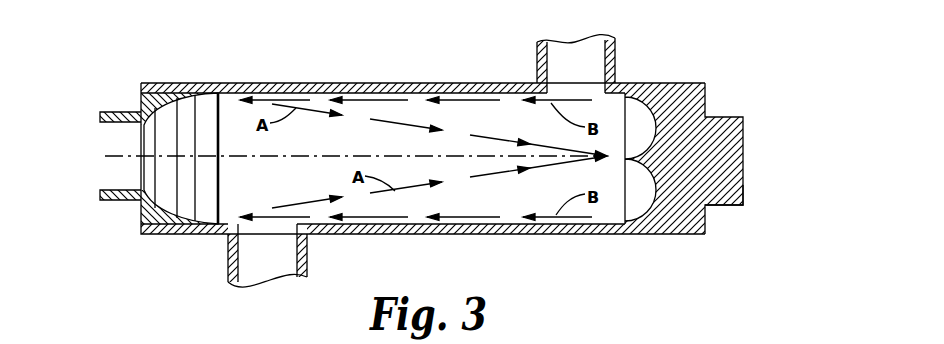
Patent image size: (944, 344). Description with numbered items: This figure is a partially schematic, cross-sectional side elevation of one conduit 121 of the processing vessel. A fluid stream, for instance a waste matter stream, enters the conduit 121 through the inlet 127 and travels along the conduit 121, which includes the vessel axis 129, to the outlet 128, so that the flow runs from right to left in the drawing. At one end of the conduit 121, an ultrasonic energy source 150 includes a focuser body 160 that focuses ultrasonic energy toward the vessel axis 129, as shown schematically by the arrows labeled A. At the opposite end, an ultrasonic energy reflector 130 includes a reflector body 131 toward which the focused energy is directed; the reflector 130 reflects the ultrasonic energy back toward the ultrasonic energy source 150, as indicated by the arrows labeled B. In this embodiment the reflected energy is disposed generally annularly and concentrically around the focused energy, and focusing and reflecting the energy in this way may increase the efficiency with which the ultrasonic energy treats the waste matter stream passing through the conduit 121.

The conduit 121 is at (469, 83).
The inlet 127 is at (582, 70).
The outlet 128 is at (253, 253).
The vessel axis 129 is at (244, 160).
The ultrasonic energy reflector 130 is at (712, 113).
The reflector body 131 is at (707, 212).
The ultrasonic energy source 150 is at (130, 110).
The focuser body 160 is at (157, 82).